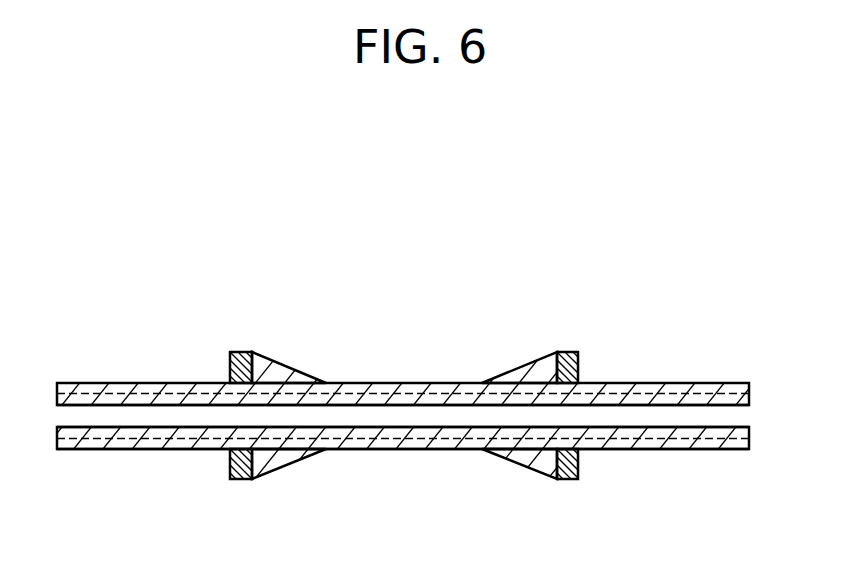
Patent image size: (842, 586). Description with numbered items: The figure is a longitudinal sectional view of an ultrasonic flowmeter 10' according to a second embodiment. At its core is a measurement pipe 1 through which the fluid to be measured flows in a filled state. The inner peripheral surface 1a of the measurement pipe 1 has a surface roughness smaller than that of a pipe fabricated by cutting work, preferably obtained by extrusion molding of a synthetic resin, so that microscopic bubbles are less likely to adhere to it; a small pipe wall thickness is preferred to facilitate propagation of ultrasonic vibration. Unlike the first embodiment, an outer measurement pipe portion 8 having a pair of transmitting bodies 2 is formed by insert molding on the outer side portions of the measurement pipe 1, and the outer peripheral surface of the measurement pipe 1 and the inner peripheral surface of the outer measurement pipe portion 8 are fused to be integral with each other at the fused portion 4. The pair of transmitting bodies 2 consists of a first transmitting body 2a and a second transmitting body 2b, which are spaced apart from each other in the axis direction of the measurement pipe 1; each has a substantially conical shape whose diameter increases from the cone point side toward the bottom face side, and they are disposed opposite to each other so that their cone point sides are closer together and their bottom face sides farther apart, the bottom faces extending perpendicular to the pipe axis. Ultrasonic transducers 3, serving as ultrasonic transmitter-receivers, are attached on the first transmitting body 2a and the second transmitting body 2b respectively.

The ultrasonic flowmeter 10' is at (397, 354).
The measurement pipe 1 is at (392, 430).
The inner peripheral surface 1a is at (617, 404).
The transmitting bodies 2 is at (420, 425).
The first transmitting body 2a is at (277, 370).
The second transmitting body 2b is at (527, 463).
The ultrasonic transducers 3 is at (242, 353).
The fused portion 4 is at (405, 392).
The outer measurement pipe portion 8 is at (441, 446).